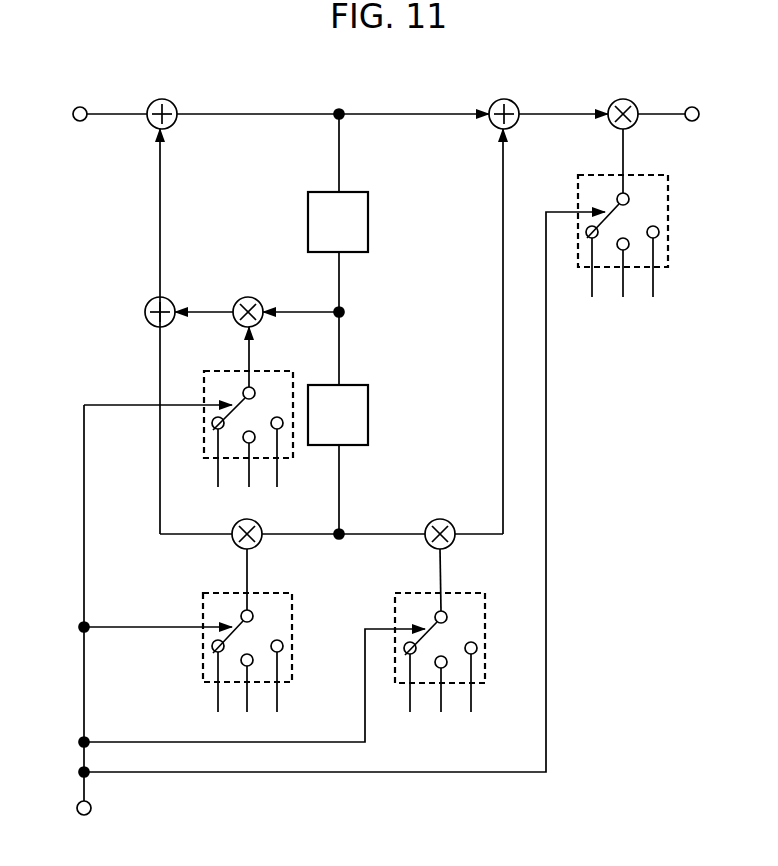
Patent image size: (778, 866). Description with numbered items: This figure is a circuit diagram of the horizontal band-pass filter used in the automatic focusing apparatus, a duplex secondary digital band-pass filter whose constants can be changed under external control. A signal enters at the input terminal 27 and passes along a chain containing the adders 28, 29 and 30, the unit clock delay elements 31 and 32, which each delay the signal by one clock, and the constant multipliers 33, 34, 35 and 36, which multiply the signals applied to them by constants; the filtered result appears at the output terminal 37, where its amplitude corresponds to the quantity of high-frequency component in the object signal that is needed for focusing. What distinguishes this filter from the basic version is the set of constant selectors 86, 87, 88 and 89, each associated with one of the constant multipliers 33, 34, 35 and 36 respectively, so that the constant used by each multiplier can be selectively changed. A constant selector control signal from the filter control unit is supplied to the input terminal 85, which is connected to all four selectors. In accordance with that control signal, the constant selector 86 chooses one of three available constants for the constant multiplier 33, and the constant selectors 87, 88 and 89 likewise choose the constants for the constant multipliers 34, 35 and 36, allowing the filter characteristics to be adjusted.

The input terminal 27 is at (81, 107).
The adder 28 is at (169, 102).
The adder 29 is at (512, 102).
The adder 30 is at (171, 303).
The unit clock delay element 31 is at (368, 203).
The unit clock delay element 32 is at (368, 394).
The constant multiplier 33 is at (245, 297).
The constant multiplier 34 is at (258, 545).
The constant multiplier 35 is at (438, 519).
The constant multiplier 36 is at (620, 100).
The output terminal 37 is at (688, 107).
The input terminal 85 is at (76, 808).
The constant selector 86 is at (243, 368).
The constant selector 87 is at (208, 608).
The constant selector 88 is at (483, 613).
The constant selector 89 is at (668, 213).